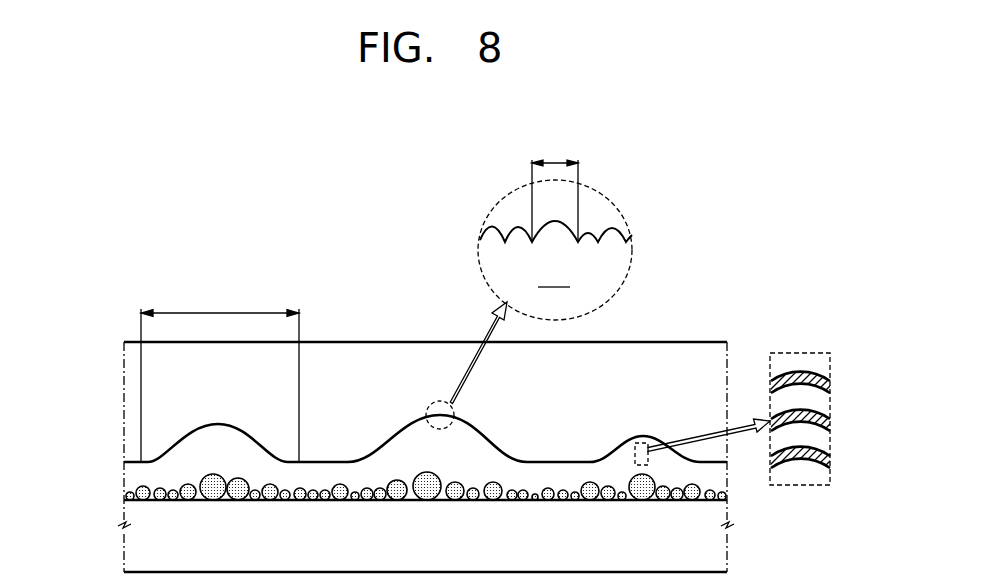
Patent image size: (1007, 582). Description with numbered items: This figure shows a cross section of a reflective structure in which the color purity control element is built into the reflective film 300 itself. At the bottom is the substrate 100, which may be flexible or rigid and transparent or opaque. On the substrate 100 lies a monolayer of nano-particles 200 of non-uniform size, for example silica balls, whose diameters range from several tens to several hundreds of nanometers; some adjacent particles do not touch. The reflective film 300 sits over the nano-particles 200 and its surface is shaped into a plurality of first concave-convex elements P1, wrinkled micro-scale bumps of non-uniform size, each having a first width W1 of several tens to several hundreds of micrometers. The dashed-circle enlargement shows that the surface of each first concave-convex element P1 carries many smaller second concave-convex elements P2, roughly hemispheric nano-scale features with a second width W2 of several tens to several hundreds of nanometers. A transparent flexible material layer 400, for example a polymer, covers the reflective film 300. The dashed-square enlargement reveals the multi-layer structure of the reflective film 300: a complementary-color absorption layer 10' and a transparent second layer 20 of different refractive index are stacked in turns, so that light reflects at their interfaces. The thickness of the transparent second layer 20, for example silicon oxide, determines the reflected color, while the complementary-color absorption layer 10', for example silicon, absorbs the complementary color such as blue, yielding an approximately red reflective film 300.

The substrate 100 is at (125, 556).
The nano-particles 200 is at (114, 493).
The reflective film 300 is at (125, 465).
The transparent flexible material layer 400 is at (125, 384).
The complementary-color absorption layer 10' is at (819, 416).
The second layer 20 is at (826, 400).
The first concave-convex elements P1 is at (385, 415).
The second concave-convex elements P2 is at (522, 218).
The first width W1 is at (220, 374).
The second width W2 is at (555, 190).